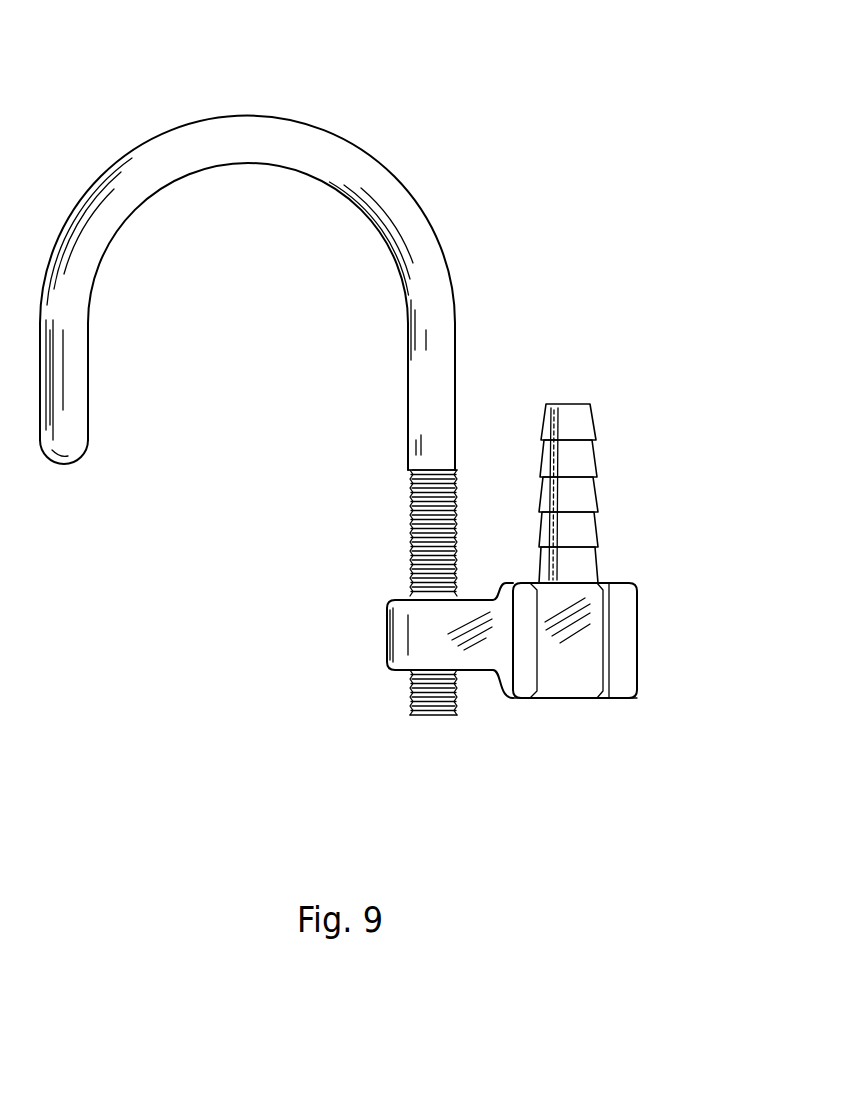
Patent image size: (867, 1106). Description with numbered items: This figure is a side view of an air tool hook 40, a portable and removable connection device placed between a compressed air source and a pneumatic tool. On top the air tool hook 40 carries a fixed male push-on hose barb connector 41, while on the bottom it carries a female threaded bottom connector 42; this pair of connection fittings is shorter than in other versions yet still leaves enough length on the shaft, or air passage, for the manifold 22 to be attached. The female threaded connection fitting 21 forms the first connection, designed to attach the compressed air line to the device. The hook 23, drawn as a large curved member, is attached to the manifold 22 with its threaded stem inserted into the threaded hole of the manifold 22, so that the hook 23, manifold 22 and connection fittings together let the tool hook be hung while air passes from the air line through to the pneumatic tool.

The air tool hook 40 is at (450, 92).
The hook 23 is at (166, 131).
The manifold 22 is at (388, 632).
The female threaded connection fitting 21 is at (637, 642).
The female threaded bottom connector 42 is at (570, 698).
The push-on hose barb connector 41 is at (572, 404).